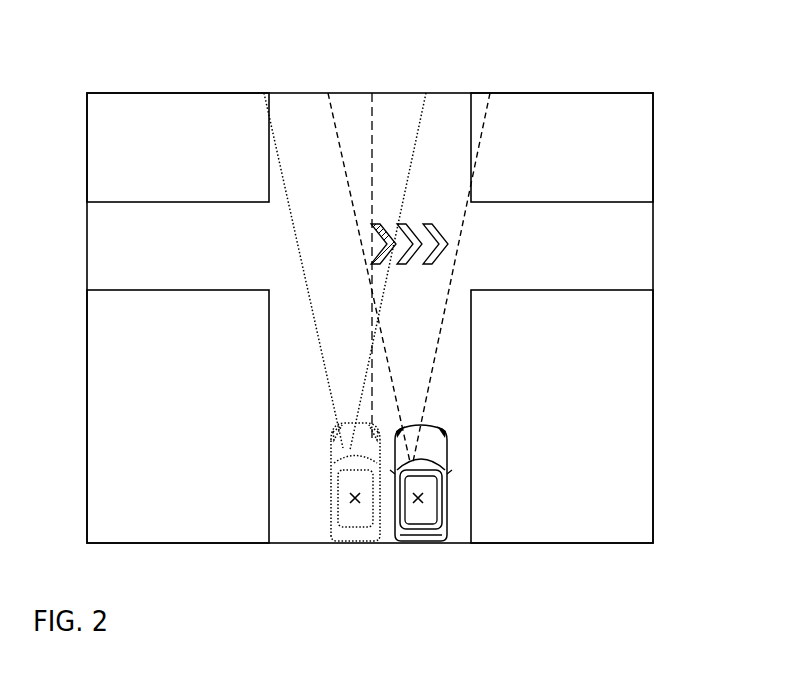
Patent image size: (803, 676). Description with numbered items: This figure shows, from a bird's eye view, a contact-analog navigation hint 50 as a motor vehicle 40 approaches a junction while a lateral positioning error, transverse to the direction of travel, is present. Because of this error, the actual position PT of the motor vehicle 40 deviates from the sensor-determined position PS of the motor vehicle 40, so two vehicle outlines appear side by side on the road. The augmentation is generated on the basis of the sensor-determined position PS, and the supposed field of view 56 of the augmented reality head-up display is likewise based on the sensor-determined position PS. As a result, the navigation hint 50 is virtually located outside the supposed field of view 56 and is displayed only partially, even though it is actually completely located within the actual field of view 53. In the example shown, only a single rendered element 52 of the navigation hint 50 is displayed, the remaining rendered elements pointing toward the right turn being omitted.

The motor vehicle 40 is at (437, 537).
The contact-analog navigation hint 50 is at (421, 210).
The rendered element 52 is at (383, 228).
The actual field of view 53 is at (462, 228).
The supposed field of view 56 is at (294, 229).
The sensor-determined position PS is at (350, 508).
The actual position PT is at (417, 508).